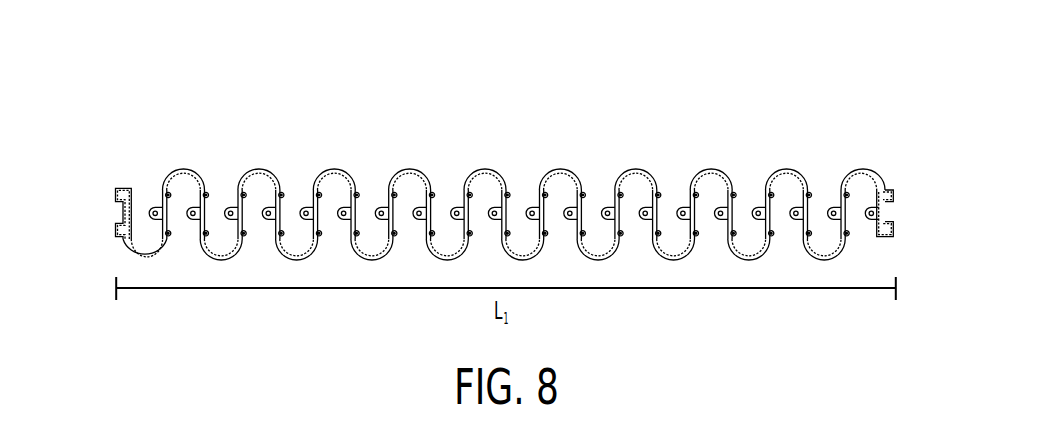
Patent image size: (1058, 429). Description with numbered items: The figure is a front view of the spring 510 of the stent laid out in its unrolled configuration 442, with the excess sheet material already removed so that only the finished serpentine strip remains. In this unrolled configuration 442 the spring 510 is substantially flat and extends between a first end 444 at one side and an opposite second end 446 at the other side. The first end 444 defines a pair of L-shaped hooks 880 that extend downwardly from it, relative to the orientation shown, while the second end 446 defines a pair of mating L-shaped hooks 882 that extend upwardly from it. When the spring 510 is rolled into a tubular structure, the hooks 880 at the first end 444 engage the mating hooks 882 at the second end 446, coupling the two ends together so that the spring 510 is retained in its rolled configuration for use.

The spring 510 is at (228, 133).
The unrolled configuration 442 is at (800, 133).
The first end 444 is at (127, 250).
The second end 446 is at (882, 185).
The L-shaped hooks 880 is at (116, 229).
The mating L-shaped hooks 882 is at (893, 230).